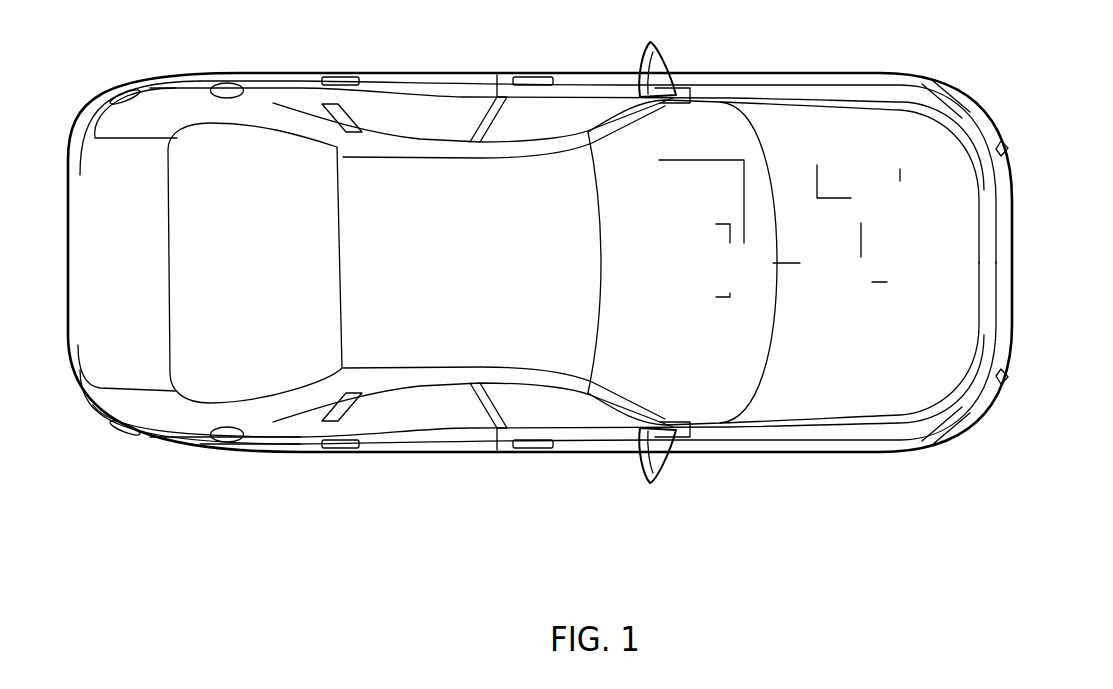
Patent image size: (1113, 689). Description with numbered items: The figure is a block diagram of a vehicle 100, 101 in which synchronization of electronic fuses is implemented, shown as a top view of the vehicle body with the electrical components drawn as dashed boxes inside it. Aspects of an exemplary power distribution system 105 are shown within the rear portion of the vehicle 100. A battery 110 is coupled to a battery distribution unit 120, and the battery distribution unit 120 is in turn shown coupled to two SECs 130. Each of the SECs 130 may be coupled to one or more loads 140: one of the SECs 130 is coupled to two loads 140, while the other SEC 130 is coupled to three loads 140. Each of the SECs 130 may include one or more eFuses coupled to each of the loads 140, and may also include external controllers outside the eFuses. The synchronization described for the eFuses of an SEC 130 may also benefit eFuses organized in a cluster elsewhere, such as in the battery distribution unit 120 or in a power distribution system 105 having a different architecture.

The vehicle 100 is at (194, 100).
The vehicle body 101 is at (540, 262).
The power distribution system 105 is at (947, 202).
The battery 110 is at (921, 287).
The battery distribution unit 120 is at (843, 282).
The SEC 130 is at (818, 237).
The load 140 is at (778, 215).